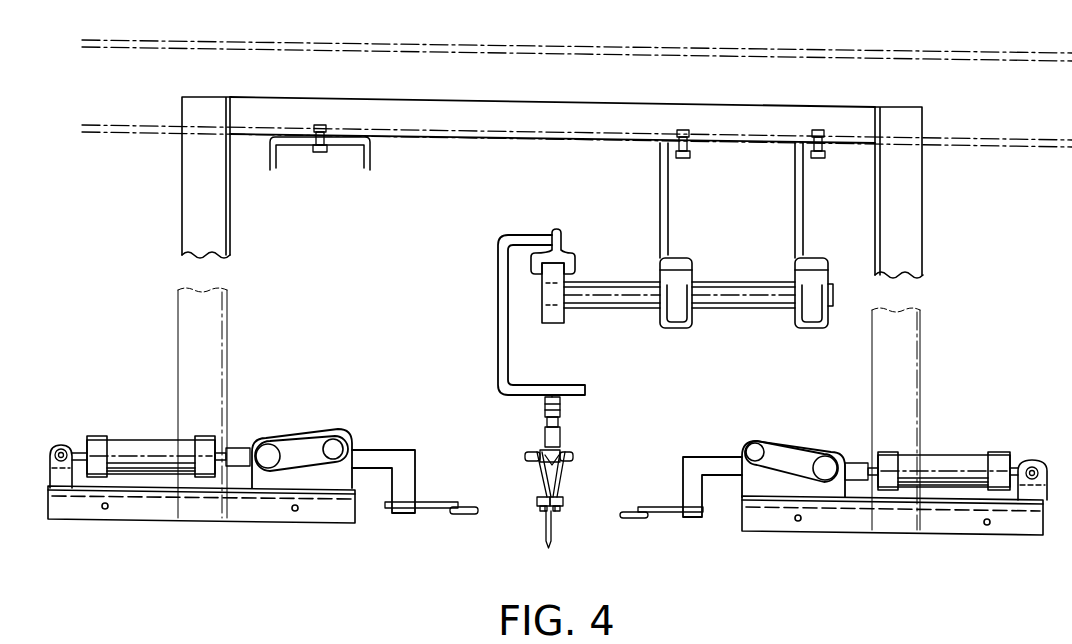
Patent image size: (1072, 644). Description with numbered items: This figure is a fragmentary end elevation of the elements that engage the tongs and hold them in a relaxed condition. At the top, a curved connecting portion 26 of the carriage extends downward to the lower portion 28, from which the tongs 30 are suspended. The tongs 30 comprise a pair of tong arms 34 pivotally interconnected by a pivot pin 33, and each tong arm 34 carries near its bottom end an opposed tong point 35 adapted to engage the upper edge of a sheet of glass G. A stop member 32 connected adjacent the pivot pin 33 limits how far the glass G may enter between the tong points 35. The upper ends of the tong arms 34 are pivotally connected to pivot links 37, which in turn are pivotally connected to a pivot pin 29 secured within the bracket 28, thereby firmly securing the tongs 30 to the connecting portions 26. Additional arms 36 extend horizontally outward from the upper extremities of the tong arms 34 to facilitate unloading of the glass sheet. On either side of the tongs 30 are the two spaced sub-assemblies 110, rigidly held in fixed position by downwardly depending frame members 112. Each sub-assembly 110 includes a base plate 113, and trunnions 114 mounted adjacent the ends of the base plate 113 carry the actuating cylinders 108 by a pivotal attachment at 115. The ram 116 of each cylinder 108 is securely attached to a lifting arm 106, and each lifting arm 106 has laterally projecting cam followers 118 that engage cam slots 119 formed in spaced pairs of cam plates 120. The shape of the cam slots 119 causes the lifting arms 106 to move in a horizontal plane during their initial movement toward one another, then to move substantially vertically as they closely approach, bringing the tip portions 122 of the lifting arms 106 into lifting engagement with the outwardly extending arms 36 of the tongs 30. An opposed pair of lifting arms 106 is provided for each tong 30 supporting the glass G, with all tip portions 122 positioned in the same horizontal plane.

The curved connecting portion 26 is at (497, 326).
The lower portion 28 is at (558, 403).
The pivot pin 29 is at (527, 460).
The tongs 30 is at (521, 418).
The stop member 32 is at (541, 497).
The pivot pin 33 is at (562, 497).
The tong arm 34 is at (562, 474).
The tong point 35 is at (540, 507).
The arm 36 is at (528, 454).
The pivot link 37 is at (563, 453).
The sheet of glass G is at (547, 540).
The lifting arm 106 is at (428, 508).
The actuating cylinder 108 is at (150, 442).
The sub-assembly 110 is at (272, 516).
The frame member 112 is at (212, 323).
The base plate 113 is at (75, 480).
The trunnion 114 is at (52, 473).
The pivotal attachment 115 is at (60, 449).
The ram 116 is at (224, 453).
The cam follower 118 is at (270, 448).
The cam slot 119 is at (342, 449).
The cam plate 120 is at (330, 432).
The tip portion 122 is at (466, 514).